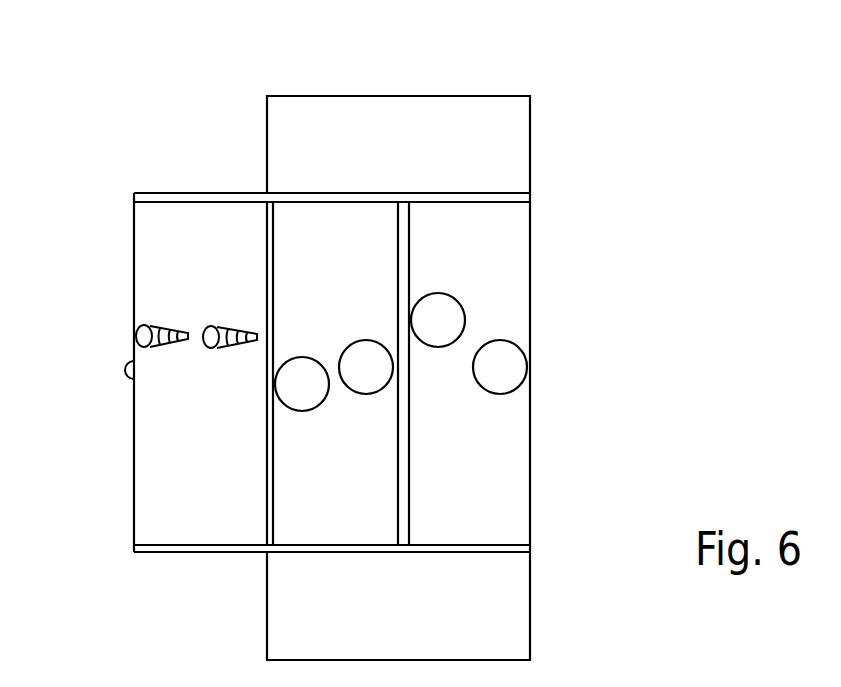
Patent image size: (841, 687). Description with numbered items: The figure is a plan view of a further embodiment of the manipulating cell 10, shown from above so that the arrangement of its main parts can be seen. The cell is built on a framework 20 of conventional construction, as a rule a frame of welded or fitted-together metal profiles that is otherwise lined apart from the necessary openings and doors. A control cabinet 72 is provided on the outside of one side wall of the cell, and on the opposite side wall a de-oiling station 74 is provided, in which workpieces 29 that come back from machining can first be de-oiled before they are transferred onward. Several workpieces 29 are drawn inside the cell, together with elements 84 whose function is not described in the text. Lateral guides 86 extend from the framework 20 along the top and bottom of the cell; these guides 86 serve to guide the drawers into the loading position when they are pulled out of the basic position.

The manipulating cell 10 is at (605, 103).
The framework 20 is at (266, 155).
The workpieces 29 is at (513, 367).
The control cabinet 72 is at (383, 118).
The de-oiling station 74 is at (288, 602).
The nozzles 84 is at (140, 332).
The lateral guides 86 is at (133, 195).